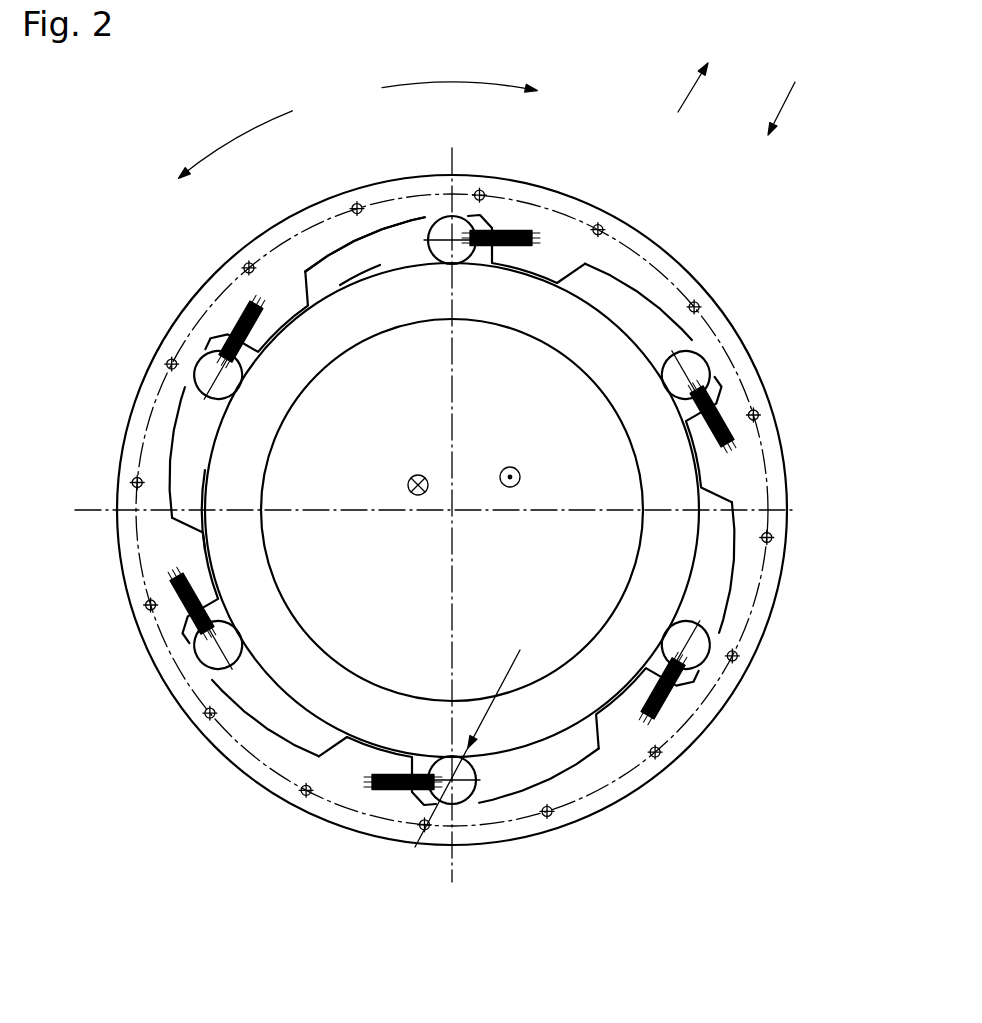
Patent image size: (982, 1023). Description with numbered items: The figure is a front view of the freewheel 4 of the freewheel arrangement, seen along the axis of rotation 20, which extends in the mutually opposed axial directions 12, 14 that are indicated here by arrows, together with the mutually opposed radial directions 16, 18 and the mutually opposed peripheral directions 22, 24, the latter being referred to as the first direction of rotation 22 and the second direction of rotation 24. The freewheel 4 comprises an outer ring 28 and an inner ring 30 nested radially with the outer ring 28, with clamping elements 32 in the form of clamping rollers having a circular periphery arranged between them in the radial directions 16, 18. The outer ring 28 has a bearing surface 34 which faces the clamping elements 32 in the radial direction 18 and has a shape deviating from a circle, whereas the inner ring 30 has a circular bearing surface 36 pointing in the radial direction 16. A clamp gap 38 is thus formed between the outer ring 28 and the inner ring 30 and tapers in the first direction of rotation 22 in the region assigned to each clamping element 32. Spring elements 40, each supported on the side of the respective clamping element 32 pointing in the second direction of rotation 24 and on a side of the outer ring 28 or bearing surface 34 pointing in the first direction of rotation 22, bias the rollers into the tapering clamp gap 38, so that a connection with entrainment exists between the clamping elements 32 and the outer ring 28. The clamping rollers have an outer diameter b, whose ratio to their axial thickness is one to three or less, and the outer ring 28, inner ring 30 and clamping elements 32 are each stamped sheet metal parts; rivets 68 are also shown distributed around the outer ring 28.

The freewheel 4 is at (648, 232).
The axial direction 12 is at (517, 469).
The axial direction 14 is at (413, 476).
The radial direction 16 is at (690, 92).
The radial direction 18 is at (785, 103).
The axis of rotation 20 is at (452, 510).
The first direction of rotation 22 is at (227, 139).
The second direction of rotation 24 is at (453, 82).
The outer ring 28 is at (287, 232).
The inner ring 30 is at (318, 342).
The clamping elements 32 is at (442, 230).
The bearing surface of the outer ring 34 is at (380, 236).
The bearing surface of the inner ring 36 is at (356, 274).
The clamp gap 38 is at (200, 442).
The spring elements 40 is at (516, 233).
The rivets 68 is at (601, 226).
The outer diameter b is at (467, 743).